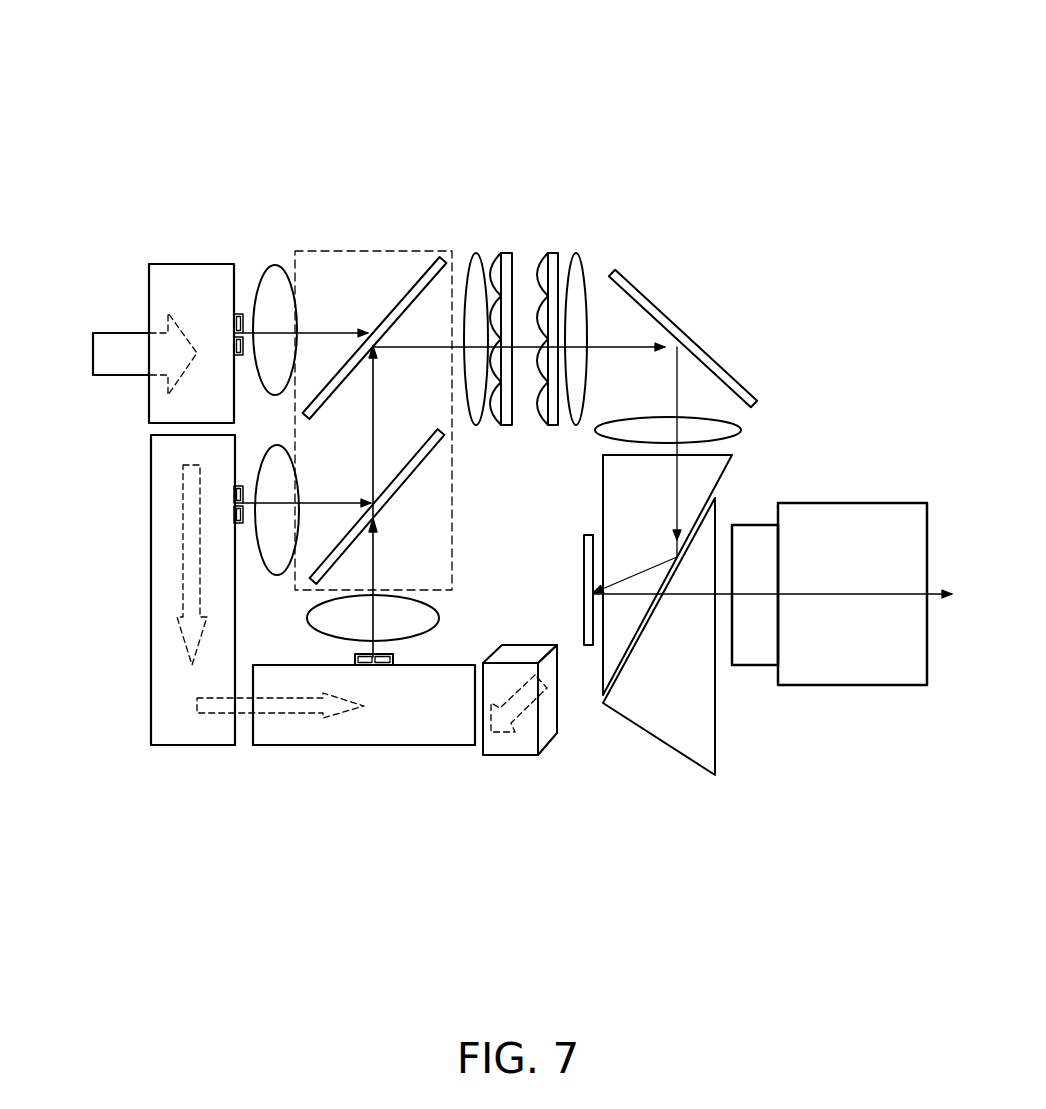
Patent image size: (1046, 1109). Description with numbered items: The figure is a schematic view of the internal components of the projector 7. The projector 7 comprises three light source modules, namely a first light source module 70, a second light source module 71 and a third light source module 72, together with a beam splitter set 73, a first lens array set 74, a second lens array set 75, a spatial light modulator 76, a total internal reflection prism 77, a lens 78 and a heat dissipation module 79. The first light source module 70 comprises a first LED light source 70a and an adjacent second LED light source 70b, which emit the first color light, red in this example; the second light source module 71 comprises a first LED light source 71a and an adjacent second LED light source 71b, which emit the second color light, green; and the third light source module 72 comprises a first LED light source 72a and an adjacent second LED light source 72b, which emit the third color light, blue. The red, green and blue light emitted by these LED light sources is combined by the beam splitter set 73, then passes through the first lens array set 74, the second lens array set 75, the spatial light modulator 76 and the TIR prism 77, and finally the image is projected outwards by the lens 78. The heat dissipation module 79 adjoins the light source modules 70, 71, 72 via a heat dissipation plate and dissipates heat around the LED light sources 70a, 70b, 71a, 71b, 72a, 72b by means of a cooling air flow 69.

The projector 7 is at (383, 53).
The cooling air flow 69 is at (122, 333).
The first light source module 70 is at (228, 318).
The first LED light source 70a is at (244, 313).
The second LED light source 70b is at (236, 369).
The second light source module 71 is at (233, 485).
The first LED light source 71a is at (235, 483).
The second LED light source 71b is at (243, 527).
The third light source module 72 is at (393, 667).
The first LED light source 72a is at (336, 654).
The second LED light source 72b is at (397, 651).
The beam splitter set 73 is at (365, 251).
The first lens array set 74 is at (480, 246).
The second lens array set 75 is at (568, 246).
The spatial light modulator 76 is at (584, 558).
The total internal reflection (TIR) prism 77 is at (717, 745).
The lens 78 is at (852, 503).
The heat dissipation module 79 is at (152, 722).